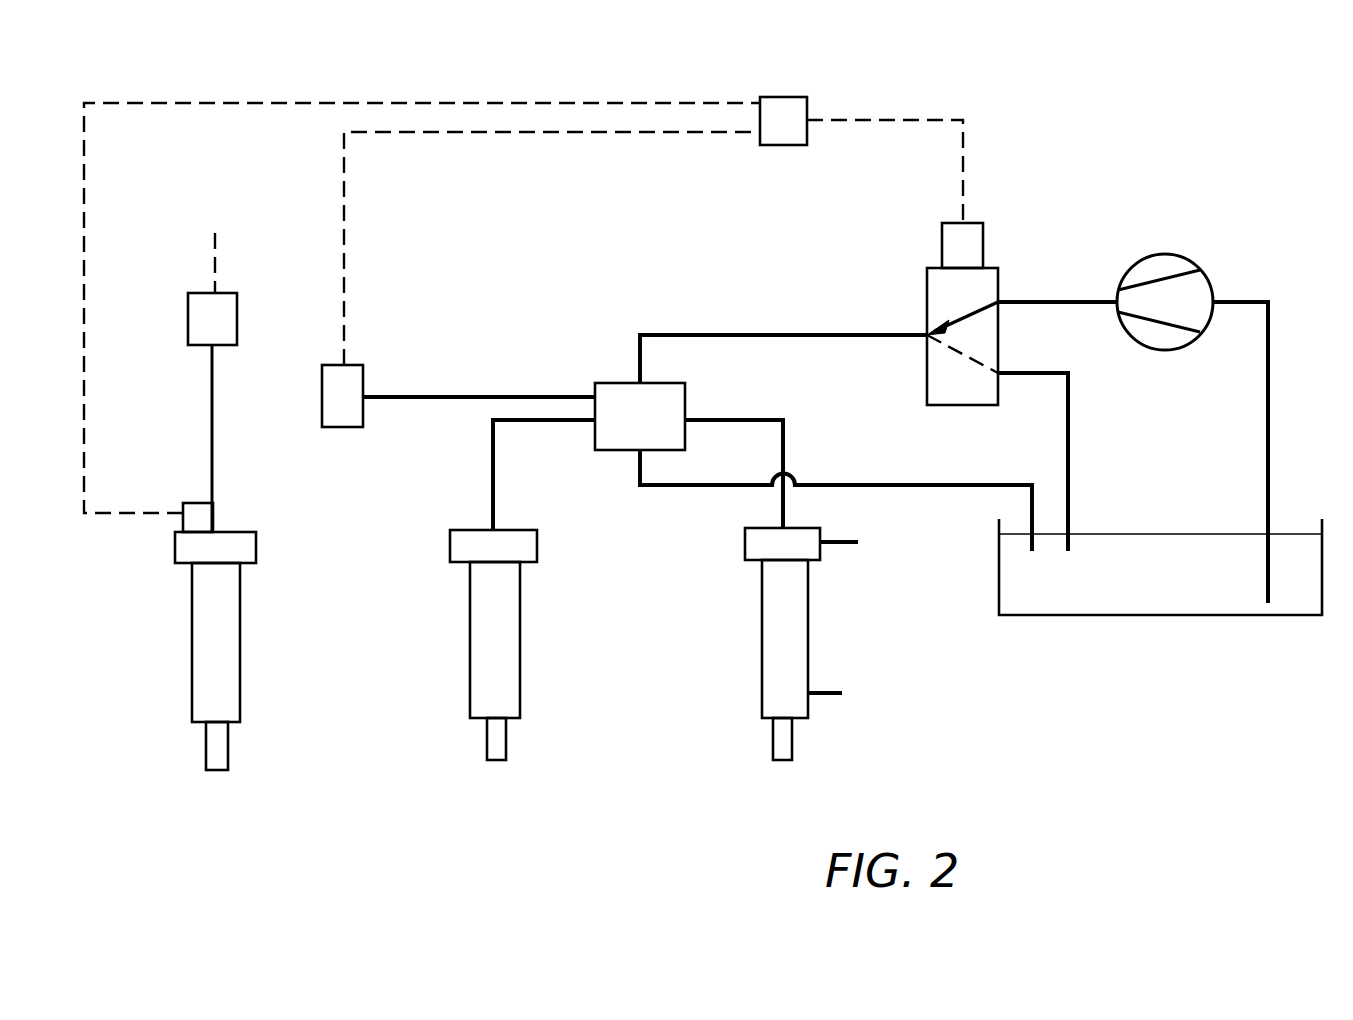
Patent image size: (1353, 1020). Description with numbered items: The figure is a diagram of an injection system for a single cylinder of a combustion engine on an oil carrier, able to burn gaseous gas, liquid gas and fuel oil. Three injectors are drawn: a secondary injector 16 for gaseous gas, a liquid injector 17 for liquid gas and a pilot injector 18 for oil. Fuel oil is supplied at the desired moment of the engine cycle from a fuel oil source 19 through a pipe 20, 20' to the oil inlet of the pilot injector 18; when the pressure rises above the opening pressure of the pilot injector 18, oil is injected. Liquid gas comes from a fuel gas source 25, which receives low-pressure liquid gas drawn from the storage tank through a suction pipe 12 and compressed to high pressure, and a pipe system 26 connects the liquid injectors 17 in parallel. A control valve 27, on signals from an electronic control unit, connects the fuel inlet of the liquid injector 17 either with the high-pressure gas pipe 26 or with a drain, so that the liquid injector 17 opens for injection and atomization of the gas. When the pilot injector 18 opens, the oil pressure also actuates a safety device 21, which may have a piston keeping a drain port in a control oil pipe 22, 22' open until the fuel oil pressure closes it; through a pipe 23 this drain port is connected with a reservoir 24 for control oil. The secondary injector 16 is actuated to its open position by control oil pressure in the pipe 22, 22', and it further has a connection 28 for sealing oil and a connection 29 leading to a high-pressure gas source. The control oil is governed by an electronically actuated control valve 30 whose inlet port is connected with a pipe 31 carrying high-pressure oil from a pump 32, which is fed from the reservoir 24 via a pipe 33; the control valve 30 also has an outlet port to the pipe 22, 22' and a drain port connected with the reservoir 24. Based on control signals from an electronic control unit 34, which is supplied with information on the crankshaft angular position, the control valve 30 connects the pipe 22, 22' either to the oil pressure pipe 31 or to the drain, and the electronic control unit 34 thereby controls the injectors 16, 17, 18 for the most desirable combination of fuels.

The suction pipe 12 is at (215, 240).
The secondary injector 16 is at (788, 642).
The liquid injector 17 is at (221, 645).
The pilot injector 18 is at (502, 650).
The fuel oil source 19 is at (353, 382).
The pipe 20 is at (544, 475).
The pipe 20' is at (479, 363).
The safety device 21 is at (620, 393).
The control oil pipe 22 is at (773, 474).
The control oil pipe 22' is at (783, 336).
The pipe 23 is at (917, 485).
The reservoir 24 is at (1191, 615).
The fuel gas source 25 is at (195, 308).
The pipe system 26 is at (212, 410).
The control valve 27 is at (202, 515).
The connection 28 is at (842, 545).
The connection 29 is at (825, 697).
The control valve 30 is at (975, 285).
The pipe 31 is at (1022, 307).
The pump 32 is at (1187, 256).
The pipe 33 is at (1268, 376).
The electronic control unit 34 is at (783, 110).